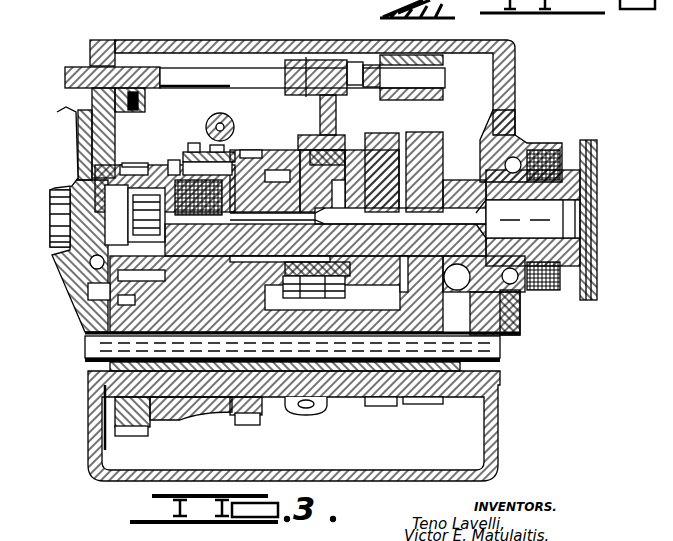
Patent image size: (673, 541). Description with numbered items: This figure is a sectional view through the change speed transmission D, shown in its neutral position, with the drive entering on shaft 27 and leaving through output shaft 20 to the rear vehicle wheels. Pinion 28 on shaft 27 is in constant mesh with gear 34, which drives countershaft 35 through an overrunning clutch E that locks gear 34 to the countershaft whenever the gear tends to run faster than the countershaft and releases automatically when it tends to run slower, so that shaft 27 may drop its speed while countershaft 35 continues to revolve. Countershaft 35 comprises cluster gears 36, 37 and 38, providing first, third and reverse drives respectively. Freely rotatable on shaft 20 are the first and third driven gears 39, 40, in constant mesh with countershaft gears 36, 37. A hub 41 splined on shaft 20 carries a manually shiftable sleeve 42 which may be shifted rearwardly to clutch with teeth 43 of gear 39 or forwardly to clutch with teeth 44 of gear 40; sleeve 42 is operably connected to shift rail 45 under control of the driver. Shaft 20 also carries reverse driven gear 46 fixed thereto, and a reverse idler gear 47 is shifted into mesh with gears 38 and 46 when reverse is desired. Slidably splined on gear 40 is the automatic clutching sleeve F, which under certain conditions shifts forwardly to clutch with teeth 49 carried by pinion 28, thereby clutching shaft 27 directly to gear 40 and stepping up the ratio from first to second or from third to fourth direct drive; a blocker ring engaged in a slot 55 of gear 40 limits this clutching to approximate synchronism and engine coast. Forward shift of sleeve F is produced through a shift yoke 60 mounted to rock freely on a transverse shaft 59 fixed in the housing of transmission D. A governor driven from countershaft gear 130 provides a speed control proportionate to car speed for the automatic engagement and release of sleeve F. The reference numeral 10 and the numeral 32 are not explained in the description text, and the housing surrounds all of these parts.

The power unit housing 10 is at (245, 21).
The output shaft 20 is at (598, 183).
The shaft 27 is at (58, 210).
The pinion 28 is at (128, 160).
The gear 32 is at (175, 211).
The gear 34 is at (121, 436).
The countershaft 35 is at (347, 398).
The countershaft gear 36 is at (380, 406).
The countershaft gear 37 is at (238, 425).
The countershaft gear 38 is at (420, 404).
The first driven gear 39 is at (387, 133).
The third driven gear 40 is at (246, 150).
The hub 41 is at (334, 213).
The manually shiftable sleeve 42 is at (338, 135).
The teeth 43 is at (352, 152).
The teeth 44 is at (280, 150).
The shift rail 45 is at (250, 68).
The reverse driven gear 46 is at (428, 133).
The reverse idler gear 47 is at (442, 372).
The teeth 49 is at (134, 163).
The slot 55 is at (172, 160).
The transverse shaft 59 is at (214, 114).
The shift yoke 60 is at (194, 143).
The countershaft gear 130 is at (308, 308).
The speed ratio transmission D is at (302, 60).
The overrunning clutch E is at (168, 406).
The automatic clutching sleeve F is at (208, 152).